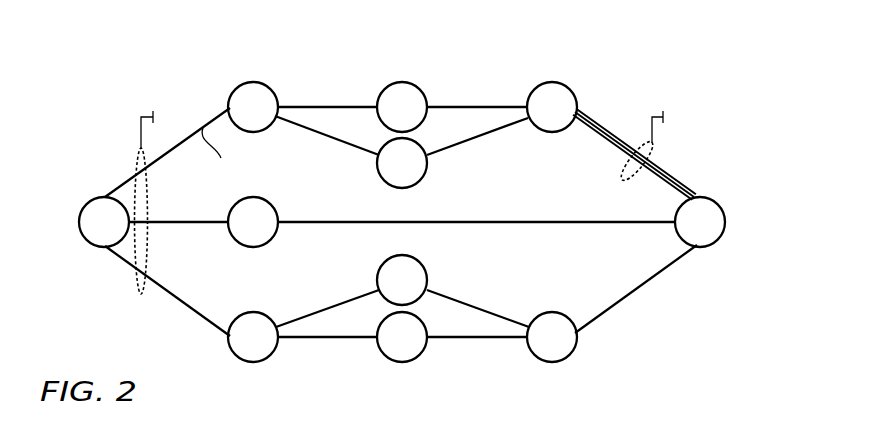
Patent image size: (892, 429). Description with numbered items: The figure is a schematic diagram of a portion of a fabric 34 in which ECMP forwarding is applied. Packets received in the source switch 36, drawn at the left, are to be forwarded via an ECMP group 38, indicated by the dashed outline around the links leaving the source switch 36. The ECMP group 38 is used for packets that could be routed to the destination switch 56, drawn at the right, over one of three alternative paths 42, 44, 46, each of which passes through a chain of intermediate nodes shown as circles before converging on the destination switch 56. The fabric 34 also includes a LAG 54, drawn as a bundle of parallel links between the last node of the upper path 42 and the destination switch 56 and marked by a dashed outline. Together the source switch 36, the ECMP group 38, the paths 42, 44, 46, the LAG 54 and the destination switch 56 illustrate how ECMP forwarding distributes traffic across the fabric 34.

The fabric 34 is at (115, 67).
The source switch 36 is at (90, 243).
The ECMP group 38 is at (135, 167).
The path 42 is at (174, 152).
The path 44 is at (197, 221).
The path 46 is at (188, 305).
The LAG 54 is at (623, 172).
The destination switch 56 is at (711, 244).